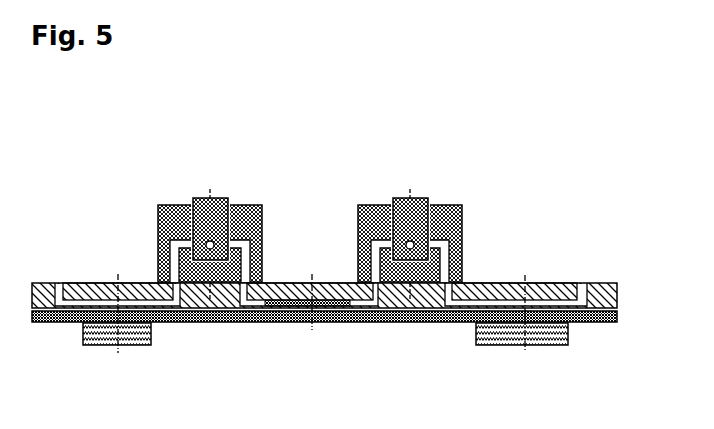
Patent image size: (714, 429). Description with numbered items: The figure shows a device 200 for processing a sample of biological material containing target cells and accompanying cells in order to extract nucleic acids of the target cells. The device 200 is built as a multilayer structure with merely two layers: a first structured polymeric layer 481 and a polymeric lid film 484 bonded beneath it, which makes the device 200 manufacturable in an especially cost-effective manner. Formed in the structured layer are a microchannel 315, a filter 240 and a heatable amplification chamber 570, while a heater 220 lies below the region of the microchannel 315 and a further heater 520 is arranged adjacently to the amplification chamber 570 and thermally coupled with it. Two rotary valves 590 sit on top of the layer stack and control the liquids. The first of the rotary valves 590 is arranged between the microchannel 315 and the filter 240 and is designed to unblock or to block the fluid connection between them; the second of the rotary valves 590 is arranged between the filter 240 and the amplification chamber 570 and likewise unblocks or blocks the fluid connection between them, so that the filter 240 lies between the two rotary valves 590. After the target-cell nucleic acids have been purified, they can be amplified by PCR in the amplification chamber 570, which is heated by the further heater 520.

The device 200 is at (558, 125).
The heater 220 is at (130, 345).
The filter 240 is at (320, 306).
The microchannel 315 is at (101, 283).
The first structured polymeric layer 481 is at (46, 283).
The polymeric lid film 484 is at (42, 322).
The further heater 520 is at (545, 340).
The heatable amplification chamber 570 is at (509, 305).
The rotary valve 590 is at (242, 206).